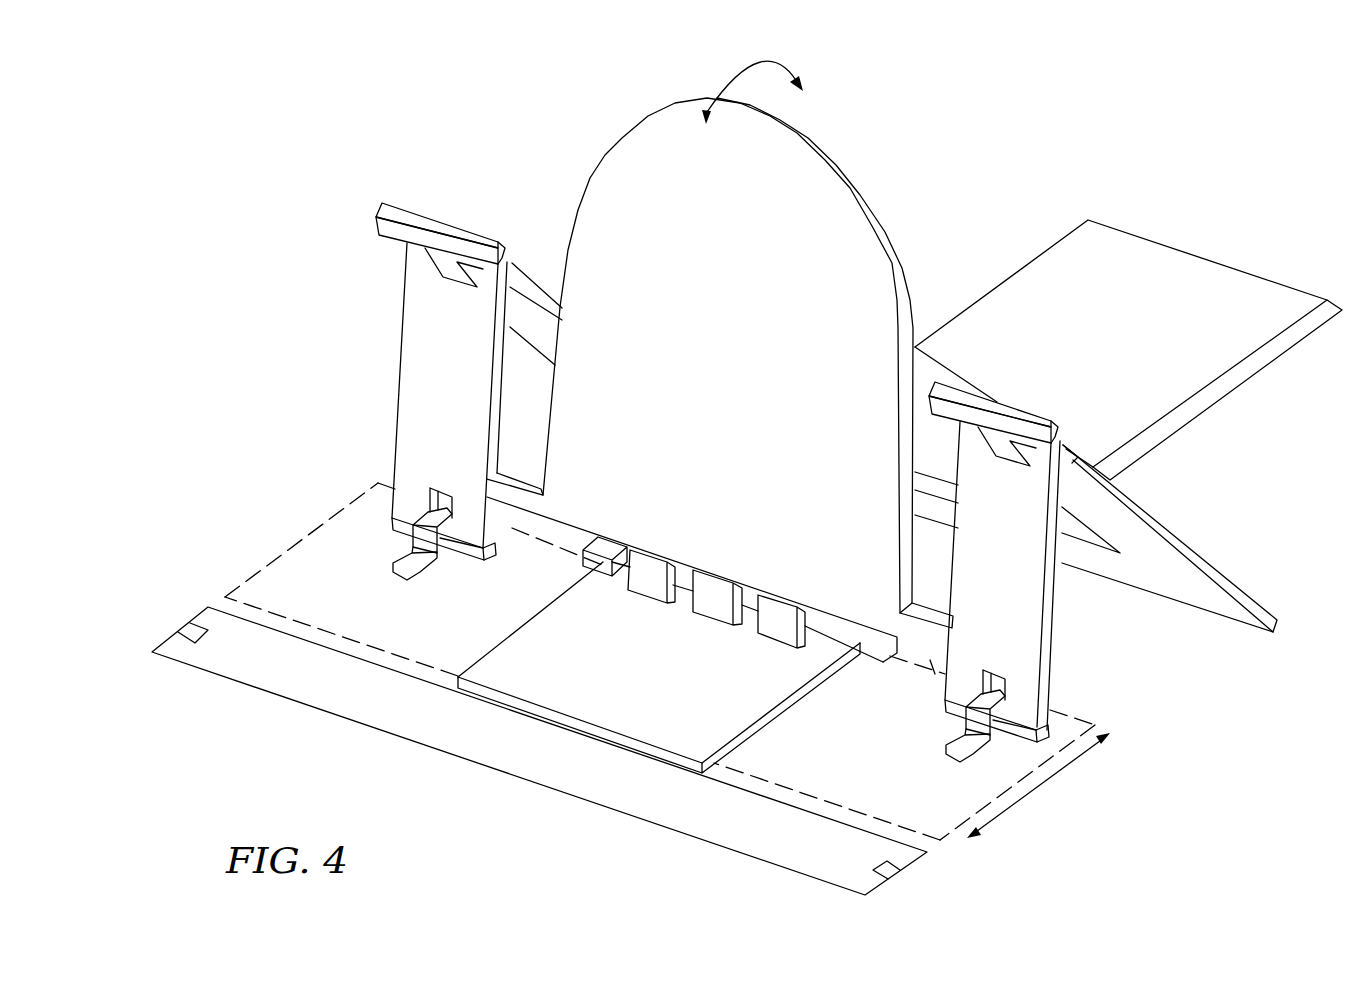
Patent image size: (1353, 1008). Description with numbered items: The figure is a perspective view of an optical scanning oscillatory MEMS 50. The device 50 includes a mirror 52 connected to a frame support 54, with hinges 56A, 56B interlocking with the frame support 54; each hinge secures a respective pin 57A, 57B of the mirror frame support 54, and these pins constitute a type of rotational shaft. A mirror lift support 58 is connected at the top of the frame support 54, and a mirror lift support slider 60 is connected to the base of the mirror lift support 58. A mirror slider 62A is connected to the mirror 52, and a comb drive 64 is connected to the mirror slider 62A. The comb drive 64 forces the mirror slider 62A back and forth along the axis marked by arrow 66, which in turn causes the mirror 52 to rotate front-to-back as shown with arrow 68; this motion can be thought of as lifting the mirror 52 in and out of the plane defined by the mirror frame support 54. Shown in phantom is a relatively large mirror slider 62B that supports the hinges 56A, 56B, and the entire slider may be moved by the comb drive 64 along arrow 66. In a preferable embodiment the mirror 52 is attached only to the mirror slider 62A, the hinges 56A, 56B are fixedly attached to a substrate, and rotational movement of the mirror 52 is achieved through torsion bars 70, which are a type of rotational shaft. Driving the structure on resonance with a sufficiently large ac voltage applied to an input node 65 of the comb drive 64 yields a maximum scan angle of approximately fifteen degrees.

The optical scanning oscillatory MEMS 50 is at (537, 168).
The mirror 52 is at (838, 210).
The frame support 54 is at (475, 362).
The hinge 56A is at (967, 753).
The hinge 56B is at (412, 567).
The pin 57A is at (1028, 733).
The pin 57B is at (457, 547).
The mirror lift support 58 is at (538, 297).
The mirror lift support slider 60 is at (1240, 292).
The mirror slider 62A is at (768, 693).
The mirror slider 62B is at (1073, 717).
The comb drive 64 is at (785, 852).
The input node 65 is at (890, 868).
The arrow 66 is at (1057, 773).
The arrow 68 is at (742, 67).
The torsion bars 70 is at (512, 520).